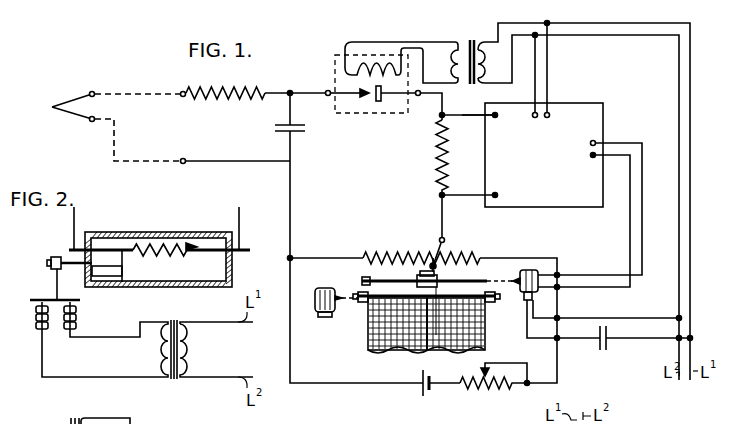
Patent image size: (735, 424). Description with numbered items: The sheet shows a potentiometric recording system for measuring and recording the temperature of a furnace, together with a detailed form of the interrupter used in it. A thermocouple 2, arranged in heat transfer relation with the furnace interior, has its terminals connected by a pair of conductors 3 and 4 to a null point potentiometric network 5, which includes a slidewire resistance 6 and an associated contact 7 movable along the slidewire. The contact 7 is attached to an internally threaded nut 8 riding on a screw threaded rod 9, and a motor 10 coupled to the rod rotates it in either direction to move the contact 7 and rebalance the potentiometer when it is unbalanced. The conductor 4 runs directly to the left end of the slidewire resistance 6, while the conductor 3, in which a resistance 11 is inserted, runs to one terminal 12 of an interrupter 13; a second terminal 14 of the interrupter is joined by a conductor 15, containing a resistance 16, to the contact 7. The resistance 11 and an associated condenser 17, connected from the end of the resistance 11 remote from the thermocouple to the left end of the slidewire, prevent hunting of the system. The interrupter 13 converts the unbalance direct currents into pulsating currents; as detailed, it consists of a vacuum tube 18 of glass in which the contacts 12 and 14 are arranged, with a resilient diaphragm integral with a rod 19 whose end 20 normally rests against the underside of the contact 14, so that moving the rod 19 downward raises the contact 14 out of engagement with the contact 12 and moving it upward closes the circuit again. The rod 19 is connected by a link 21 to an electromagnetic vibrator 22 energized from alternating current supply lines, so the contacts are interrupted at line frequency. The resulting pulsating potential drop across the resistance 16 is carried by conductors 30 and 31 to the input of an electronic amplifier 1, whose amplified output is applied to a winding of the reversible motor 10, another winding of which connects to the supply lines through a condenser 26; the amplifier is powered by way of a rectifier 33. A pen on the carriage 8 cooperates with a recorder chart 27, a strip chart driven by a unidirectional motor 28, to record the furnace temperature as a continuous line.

In FIG. 1, the electronic amplifier 1 is at (566, 113).
In FIG. 1, the thermocouple 2 is at (66, 104).
In FIG. 1, the conductor 3 is at (117, 94).
In FIG. 1, the conductor 4 is at (150, 165).
In FIG. 1, the null point potentiometric network 5 is at (364, 243).
In FIG. 1, the slidewire resistance 6 is at (447, 258).
In FIG. 1, the contact 7 is at (414, 268).
In FIG. 1, the nut 8 is at (440, 279).
In FIG. 1, the screw threaded rod 9 is at (366, 277).
In FIG. 1, the motor 10 is at (516, 275).
In FIG. 1, the resistance 11 is at (226, 94).
In FIG. 1, the terminal 12 is at (366, 99).
In FIG. 2, the terminal 12 is at (188, 253).
In FIG. 1, the interrupter 13 is at (336, 73).
In FIG. 1, the terminal 14 is at (378, 102).
In FIG. 2, the terminal 14 is at (160, 252).
In FIG. 1, the conductor 15 is at (444, 102).
In FIG. 1, the resistance 16 is at (438, 165).
In FIG. 1, the condenser 17 is at (275, 128).
In FIG. 2, the vacuum tube 18 is at (170, 232).
In FIG. 2, the rod 19 is at (57, 257).
In FIG. 2, the end 20 is at (122, 283).
In FIG. 2, the link 21 is at (55, 283).
In FIG. 2, the vibrator 22 is at (36, 323).
In FIG. 1, the condenser 26 is at (605, 350).
In FIG. 1, the recorder chart 27 is at (370, 336).
In FIG. 1, the unidirectional motor 28 is at (326, 288).
In FIG. 1, the conductor 30 is at (484, 116).
In FIG. 1, the conductor 31 is at (484, 195).
In FIG. 2, the rectifier 33 is at (202, 370).